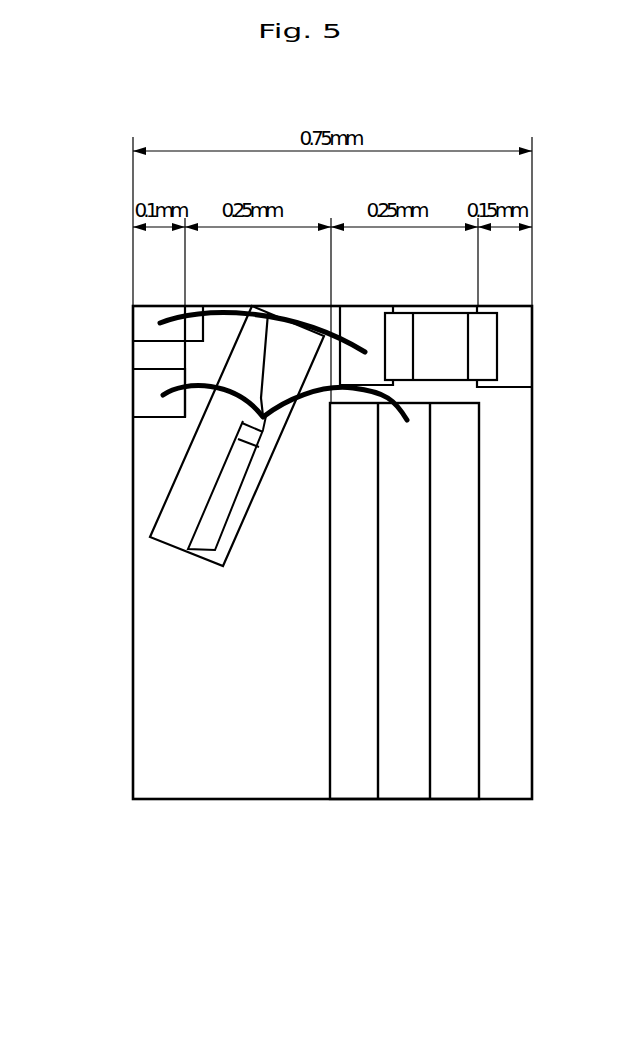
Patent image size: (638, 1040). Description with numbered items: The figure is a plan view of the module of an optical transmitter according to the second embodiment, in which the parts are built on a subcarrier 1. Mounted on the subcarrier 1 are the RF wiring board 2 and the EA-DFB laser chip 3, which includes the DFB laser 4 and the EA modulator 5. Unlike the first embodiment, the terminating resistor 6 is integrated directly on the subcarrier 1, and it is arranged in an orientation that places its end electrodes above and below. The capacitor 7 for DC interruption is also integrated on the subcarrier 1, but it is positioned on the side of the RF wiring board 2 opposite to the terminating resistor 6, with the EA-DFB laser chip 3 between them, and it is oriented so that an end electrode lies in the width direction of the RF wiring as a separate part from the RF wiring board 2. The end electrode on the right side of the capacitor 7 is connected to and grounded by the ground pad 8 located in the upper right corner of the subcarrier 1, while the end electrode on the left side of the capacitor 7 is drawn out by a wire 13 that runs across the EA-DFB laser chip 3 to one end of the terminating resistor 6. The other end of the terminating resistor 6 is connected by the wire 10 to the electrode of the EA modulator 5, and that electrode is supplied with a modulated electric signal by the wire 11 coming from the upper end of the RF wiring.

The subcarrier 1 is at (300, 776).
The RF wiring board 2 is at (363, 776).
The EA-DFB laser chip 3 is at (173, 505).
The DFB laser 4 is at (212, 527).
The EA modulator 5 is at (273, 425).
The terminating resistor 6 is at (146, 360).
The capacitor 7 is at (438, 326).
The ground pad 8 is at (513, 326).
The wire 10 is at (172, 392).
The wire 11 is at (303, 403).
The wire 13 is at (228, 316).